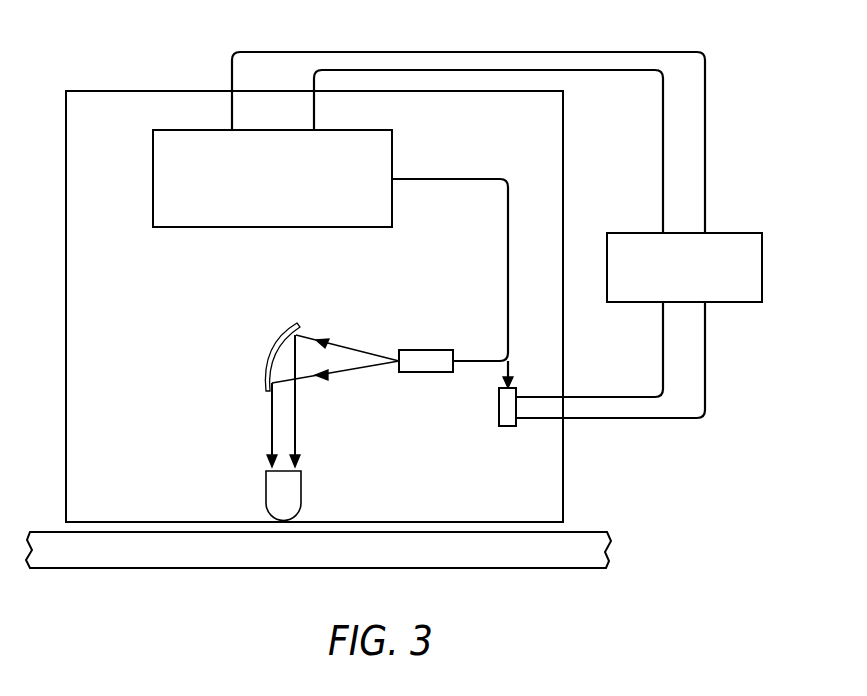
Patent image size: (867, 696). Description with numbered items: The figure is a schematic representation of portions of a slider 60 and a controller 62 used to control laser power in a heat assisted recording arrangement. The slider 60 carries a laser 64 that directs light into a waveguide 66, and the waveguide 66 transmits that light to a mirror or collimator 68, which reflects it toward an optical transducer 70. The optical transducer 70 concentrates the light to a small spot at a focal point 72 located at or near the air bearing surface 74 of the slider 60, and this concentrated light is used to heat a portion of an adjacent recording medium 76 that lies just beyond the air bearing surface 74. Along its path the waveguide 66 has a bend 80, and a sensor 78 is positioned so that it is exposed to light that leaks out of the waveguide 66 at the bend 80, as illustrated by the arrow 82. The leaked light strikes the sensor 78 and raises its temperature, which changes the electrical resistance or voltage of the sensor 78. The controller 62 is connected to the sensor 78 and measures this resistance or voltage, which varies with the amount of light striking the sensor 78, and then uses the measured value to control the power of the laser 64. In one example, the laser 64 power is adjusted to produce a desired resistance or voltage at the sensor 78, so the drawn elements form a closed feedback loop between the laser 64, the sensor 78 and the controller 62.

The slider 60 is at (92, 86).
The controller 62 is at (727, 303).
The laser 64 is at (213, 228).
The waveguide 66 is at (443, 178).
The mirror or collimator 68 is at (270, 358).
The optical transducer 70 is at (292, 488).
The focal point 72 is at (282, 522).
The air bearing surface 74 is at (145, 522).
The recording medium 76 is at (552, 560).
The sensor 78 is at (507, 428).
The bend 80 is at (512, 358).
The arrow 82 is at (498, 381).